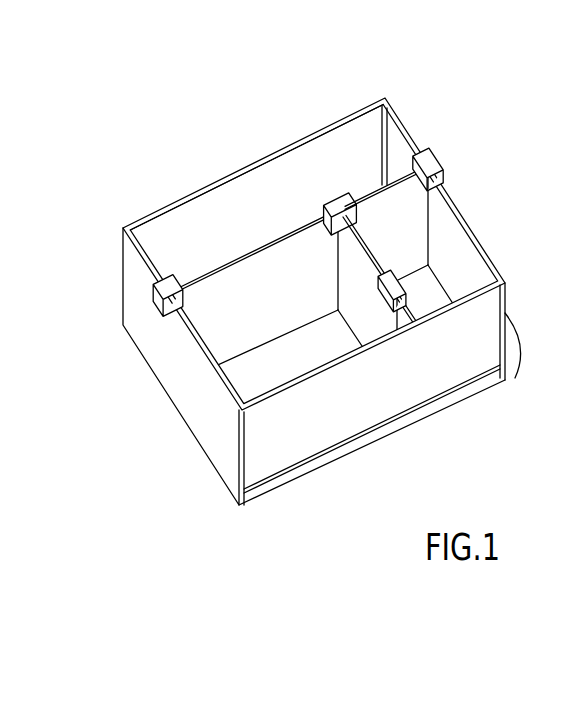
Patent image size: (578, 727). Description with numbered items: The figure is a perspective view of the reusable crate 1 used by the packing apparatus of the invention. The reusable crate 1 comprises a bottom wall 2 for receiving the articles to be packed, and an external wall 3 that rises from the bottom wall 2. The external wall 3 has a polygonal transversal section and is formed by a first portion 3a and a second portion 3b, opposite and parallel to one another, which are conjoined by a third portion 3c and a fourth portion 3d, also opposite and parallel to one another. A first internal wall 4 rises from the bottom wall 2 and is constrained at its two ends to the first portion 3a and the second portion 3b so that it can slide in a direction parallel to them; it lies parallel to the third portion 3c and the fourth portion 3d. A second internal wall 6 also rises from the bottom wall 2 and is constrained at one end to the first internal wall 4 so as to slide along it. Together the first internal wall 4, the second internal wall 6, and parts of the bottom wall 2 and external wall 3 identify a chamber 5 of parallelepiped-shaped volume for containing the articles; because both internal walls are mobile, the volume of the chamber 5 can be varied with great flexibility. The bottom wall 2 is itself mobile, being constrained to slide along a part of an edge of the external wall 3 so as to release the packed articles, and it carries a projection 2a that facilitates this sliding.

The reusable crate 1 is at (163, 113).
The bottom wall 2 is at (260, 377).
The projection 2a is at (513, 357).
The external wall 3 is at (132, 335).
The first portion 3a is at (222, 447).
The second portion 3b is at (452, 245).
The third portion 3c is at (310, 442).
The fourth portion 3d is at (280, 176).
The first internal wall 4 is at (245, 285).
The chamber 5 is at (416, 256).
The second internal wall 6 is at (356, 318).